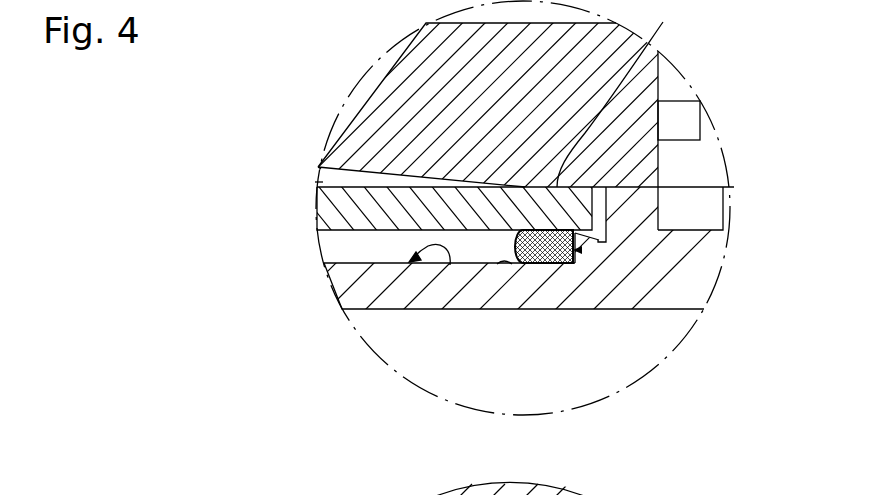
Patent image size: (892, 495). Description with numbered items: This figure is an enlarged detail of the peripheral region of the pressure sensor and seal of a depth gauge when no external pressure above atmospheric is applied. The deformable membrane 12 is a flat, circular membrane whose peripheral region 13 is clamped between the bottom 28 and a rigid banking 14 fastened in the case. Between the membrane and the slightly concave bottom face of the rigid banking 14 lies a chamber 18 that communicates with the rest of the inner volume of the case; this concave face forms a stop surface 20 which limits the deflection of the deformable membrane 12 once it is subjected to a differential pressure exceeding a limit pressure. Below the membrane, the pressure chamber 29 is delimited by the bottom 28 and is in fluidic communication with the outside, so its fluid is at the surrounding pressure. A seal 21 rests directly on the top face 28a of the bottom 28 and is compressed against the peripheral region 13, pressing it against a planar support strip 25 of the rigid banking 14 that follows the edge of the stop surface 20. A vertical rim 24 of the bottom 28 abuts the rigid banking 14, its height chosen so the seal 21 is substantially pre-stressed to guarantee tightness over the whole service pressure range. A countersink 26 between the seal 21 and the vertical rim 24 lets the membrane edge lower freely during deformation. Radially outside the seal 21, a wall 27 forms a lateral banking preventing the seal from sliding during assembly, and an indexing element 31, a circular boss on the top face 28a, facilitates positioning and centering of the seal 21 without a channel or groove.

The deformable membrane 12 is at (338, 217).
The peripheral region 13 is at (593, 186).
The rigid banking 14 is at (386, 73).
The chamber 18 is at (318, 182).
The stop surface 20 is at (321, 168).
The seal 21 is at (530, 252).
The vertical rim 24 is at (632, 213).
The support strip 25 is at (628, 116).
The countersink 26 is at (578, 250).
The wall 27 is at (595, 243).
The bottom 28 is at (363, 287).
The top face 28a is at (450, 265).
The pressure chamber 29 is at (363, 250).
The indexing element 31 is at (505, 264).